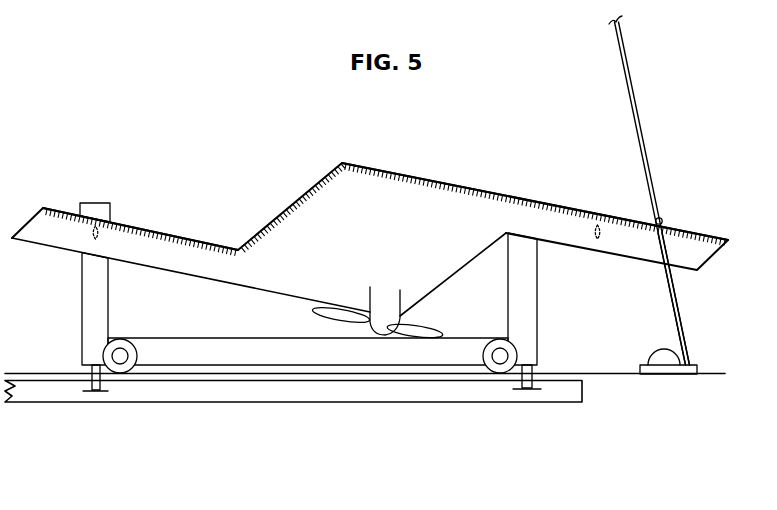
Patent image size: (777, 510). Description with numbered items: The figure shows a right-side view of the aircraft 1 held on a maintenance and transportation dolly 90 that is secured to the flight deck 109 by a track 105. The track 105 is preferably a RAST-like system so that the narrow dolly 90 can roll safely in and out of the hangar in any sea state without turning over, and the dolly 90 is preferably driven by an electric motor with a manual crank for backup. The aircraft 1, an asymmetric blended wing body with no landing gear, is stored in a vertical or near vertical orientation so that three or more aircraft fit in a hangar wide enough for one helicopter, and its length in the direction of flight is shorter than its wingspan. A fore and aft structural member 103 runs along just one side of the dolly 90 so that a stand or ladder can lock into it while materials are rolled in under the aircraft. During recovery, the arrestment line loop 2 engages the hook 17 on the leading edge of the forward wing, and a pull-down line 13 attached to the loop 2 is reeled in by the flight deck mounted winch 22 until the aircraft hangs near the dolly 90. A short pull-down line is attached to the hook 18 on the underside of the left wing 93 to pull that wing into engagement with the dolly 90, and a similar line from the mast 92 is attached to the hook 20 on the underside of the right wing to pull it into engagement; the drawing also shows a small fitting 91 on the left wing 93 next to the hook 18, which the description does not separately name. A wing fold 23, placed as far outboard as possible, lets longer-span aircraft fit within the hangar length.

The aircraft 1 is at (362, 248).
The arrestment line loop 2 is at (620, 31).
The pull-down line 13 is at (672, 287).
The hook 17 is at (660, 222).
The hook 18 is at (99, 220).
The hook 20 is at (540, 202).
The flight deck mounted winch 22 is at (693, 361).
The wing fold 23 is at (601, 219).
The maintenance and transportation dolly 90 is at (82, 280).
The mounting block 91 is at (97, 203).
The mast 92 is at (538, 285).
The left wing 93 is at (229, 240).
The fore and aft structural member 103 is at (232, 347).
The track 105 is at (318, 394).
The flight deck 109 is at (585, 380).